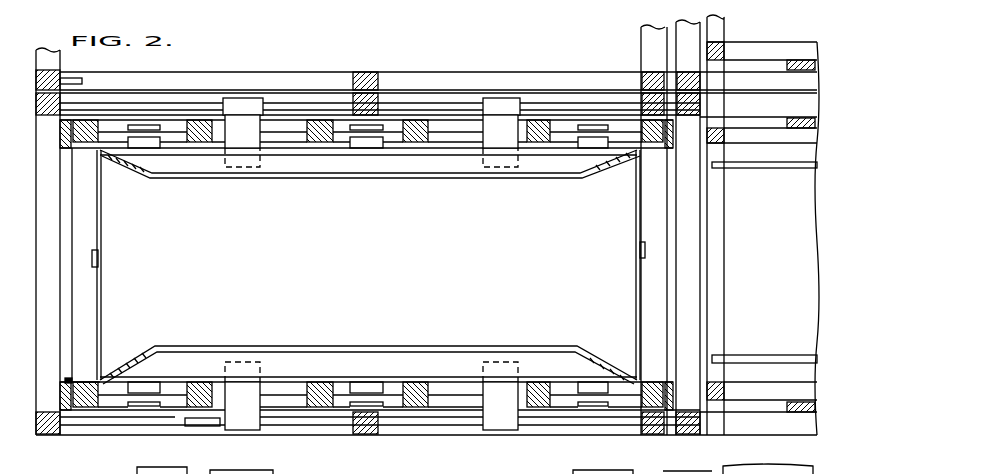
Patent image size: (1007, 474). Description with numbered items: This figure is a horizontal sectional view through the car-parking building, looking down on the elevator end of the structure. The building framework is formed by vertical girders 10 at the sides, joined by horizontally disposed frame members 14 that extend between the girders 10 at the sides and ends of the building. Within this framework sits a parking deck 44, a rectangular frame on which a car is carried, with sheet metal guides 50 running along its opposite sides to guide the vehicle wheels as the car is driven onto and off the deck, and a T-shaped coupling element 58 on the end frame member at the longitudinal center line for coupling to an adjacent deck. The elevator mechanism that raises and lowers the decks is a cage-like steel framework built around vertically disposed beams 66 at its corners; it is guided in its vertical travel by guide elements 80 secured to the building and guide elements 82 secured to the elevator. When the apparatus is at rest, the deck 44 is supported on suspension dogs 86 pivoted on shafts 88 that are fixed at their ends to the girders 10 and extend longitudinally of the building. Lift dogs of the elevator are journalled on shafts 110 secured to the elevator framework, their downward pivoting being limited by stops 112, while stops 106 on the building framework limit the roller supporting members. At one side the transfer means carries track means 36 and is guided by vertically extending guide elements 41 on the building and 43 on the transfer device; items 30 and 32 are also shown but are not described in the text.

The vertical girder 10 is at (62, 94).
The frame member 14 is at (58, 235).
The mounting column 30 is at (725, 164).
The support post 32 is at (715, 238).
The track means 36 is at (800, 170).
The guide element 41 is at (803, 117).
The guide element 43 is at (787, 122).
The parking deck 44 is at (397, 266).
The sheet metal guide 50 is at (330, 178).
The T-shaped coupling element 58 is at (98, 258).
The vertically disposed beam 66 is at (98, 165).
The vertical guide element 80 is at (65, 381).
The vertical guide element 82 is at (72, 382).
The suspension dog 86 is at (245, 151).
The shaft 88 is at (122, 107).
The stop 106 is at (160, 143).
The shaft 110 is at (620, 385).
The stop 112 is at (565, 128).